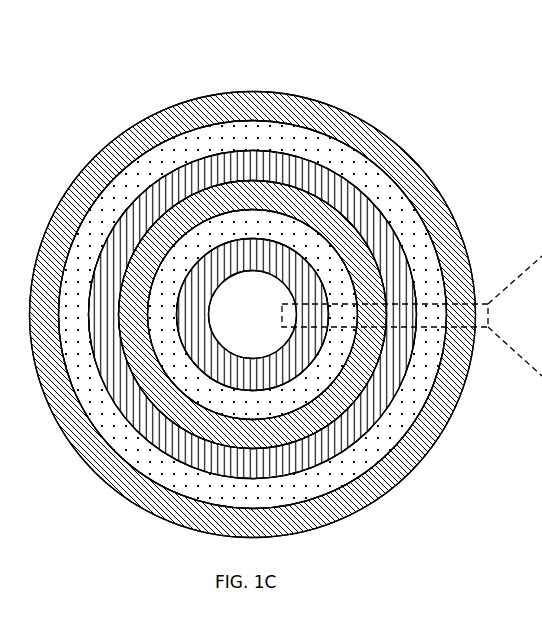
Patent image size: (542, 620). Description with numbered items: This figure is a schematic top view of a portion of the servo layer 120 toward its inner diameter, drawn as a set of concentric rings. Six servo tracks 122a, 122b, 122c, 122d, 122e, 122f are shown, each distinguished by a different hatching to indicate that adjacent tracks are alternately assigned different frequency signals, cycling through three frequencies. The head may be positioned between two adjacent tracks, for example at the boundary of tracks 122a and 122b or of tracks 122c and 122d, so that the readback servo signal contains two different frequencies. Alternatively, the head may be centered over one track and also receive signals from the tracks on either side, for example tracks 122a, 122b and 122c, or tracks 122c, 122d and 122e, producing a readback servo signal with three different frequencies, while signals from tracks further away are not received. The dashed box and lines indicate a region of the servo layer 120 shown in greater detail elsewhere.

The servo layer 120 is at (146, 87).
The servo track 122a is at (287, 363).
The servo track 122b is at (333, 343).
The servo track 122c is at (357, 247).
The servo track 122d is at (338, 190).
The servo track 122e is at (303, 142).
The servo track 122f is at (330, 78).